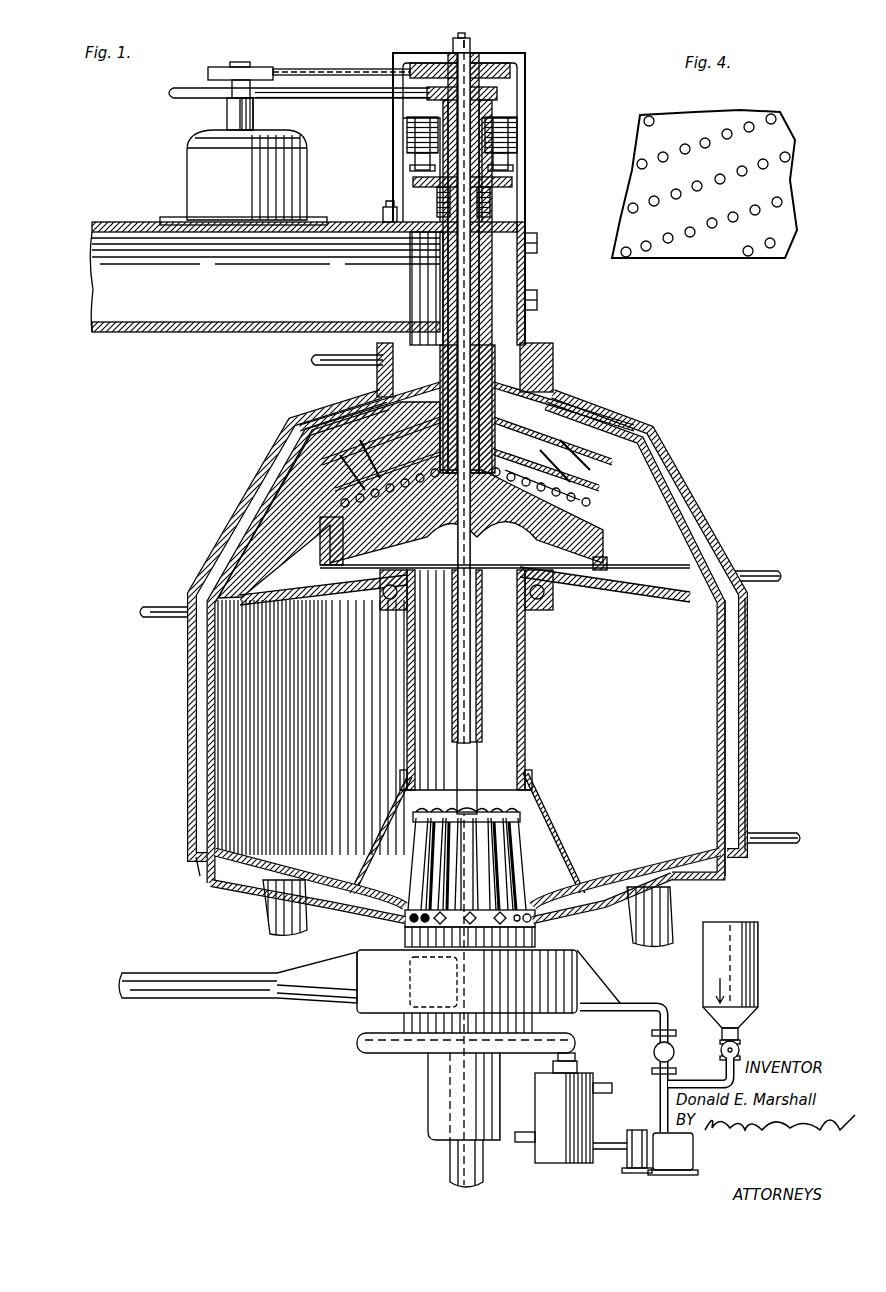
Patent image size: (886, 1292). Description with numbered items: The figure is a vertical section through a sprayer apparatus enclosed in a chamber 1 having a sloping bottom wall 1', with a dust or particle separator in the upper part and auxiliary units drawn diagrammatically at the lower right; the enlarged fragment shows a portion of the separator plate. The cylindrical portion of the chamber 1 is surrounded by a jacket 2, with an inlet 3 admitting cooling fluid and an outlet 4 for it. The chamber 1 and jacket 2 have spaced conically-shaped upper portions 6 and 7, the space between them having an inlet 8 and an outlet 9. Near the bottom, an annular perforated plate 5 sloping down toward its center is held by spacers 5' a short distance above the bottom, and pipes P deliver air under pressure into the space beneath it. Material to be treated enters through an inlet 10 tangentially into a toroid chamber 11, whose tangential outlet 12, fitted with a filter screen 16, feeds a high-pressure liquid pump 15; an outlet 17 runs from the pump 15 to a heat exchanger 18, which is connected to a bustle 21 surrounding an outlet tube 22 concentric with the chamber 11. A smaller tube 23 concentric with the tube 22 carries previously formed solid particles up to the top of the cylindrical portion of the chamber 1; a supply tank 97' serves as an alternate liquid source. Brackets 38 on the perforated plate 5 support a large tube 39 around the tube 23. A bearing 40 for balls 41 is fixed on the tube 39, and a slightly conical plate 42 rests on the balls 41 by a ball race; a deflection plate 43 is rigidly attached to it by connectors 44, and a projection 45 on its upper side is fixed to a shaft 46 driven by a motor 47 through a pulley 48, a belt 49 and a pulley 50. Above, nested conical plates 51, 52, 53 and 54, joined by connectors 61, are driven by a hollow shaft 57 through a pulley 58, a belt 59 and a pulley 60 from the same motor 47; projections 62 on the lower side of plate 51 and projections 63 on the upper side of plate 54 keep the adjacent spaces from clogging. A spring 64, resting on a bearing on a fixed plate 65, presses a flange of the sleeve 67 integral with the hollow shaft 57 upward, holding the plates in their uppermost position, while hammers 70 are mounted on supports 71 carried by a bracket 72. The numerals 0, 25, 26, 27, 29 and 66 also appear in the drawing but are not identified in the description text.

In FIG. 1, the housing duct 0 is at (143, 333).
In FIG. 1, the chamber 1 is at (750, 738).
In FIG. 1, the sloping bottom wall 1' is at (212, 886).
In FIG. 1, the jacket 2 is at (747, 722).
In FIG. 1, the inlet 3 is at (168, 606).
In FIG. 1, the outlet 4 is at (778, 833).
In FIG. 1, the annular perforated plate 5 is at (467, 864).
In FIG. 1, the spacers 5' is at (441, 899).
In FIG. 1, the conically-shaped upper portion 6 is at (230, 553).
In FIG. 1, the conically-shaped upper portion 7 is at (240, 526).
In FIG. 1, the inlet 8 is at (310, 358).
In FIG. 1, the outlet 9 is at (772, 571).
In FIG. 1, the inlet 10 is at (165, 1002).
In FIG. 1, the toroid chamber 11 is at (357, 1003).
In FIG. 1, the tangential outlet 12 is at (662, 1006).
In FIG. 1, the high-pressure liquid pump 15 is at (636, 1130).
In FIG. 1, the filter screen 16 is at (652, 1054).
In FIG. 1, the outlet 17 is at (600, 1160).
In FIG. 1, the heat exchanger 18 is at (535, 1110).
In FIG. 1, the bustle 21 is at (357, 1050).
In FIG. 1, the outlet tube 22 is at (428, 1106).
In FIG. 1, the tube 23 is at (482, 660).
In FIG. 1, the shaft head 25 is at (480, 812).
In FIG. 1, the lower ring 26 is at (535, 935).
In FIG. 1, the upper ring 27 is at (405, 930).
In FIG. 1, the tubes 29 is at (520, 842).
In FIG. 1, the brackets 38 is at (404, 810).
In FIG. 1, the large tube 39 is at (525, 690).
In FIG. 1, the bearing 40 is at (548, 612).
In FIG. 1, the balls 41 is at (544, 595).
In FIG. 1, the conical plate 42 is at (628, 605).
In FIG. 1, the deflection plate 43 is at (480, 515).
In FIG. 1, the connectors 44 is at (607, 566).
In FIG. 1, the projection 45 is at (560, 395).
In FIG. 1, the shaft 46 is at (470, 262).
In FIG. 1, the motor 47 is at (307, 165).
In FIG. 1, the pulley 48 is at (220, 66).
In FIG. 1, the belt 49 is at (352, 66).
In FIG. 1, the pulley 50 is at (510, 72).
In FIG. 1, the conical plate 51 is at (592, 505).
In FIG. 4, the conical plate 51 is at (778, 185).
In FIG. 1, the conical plate 52 is at (598, 500).
In FIG. 1, the conical plate 53 is at (600, 478).
In FIG. 1, the conical plate 54 is at (640, 453).
In FIG. 1, the hollow shaft 57 is at (479, 322).
In FIG. 1, the pulley 58 is at (497, 95).
In FIG. 1, the belt 59 is at (330, 100).
In FIG. 1, the pulley 60 is at (227, 104).
In FIG. 1, the connectors 61 is at (372, 402).
In FIG. 1, the projections 62 is at (430, 515).
In FIG. 4, the projections 62 is at (668, 160).
In FIG. 1, the projections 63 is at (330, 420).
In FIG. 1, the spring 64 is at (490, 200).
In FIG. 1, the plate 65 is at (517, 226).
In FIG. 1, the bolt 66 is at (537, 250).
In FIG. 1, the sleeve 67 is at (383, 192).
In FIG. 1, the hammers 70 is at (407, 135).
In FIG. 1, the supports 71 is at (403, 114).
In FIG. 1, the bracket 72 is at (393, 178).
In FIG. 1, the supply tank 97' is at (733, 1003).
In FIG. 1, the pipes P is at (262, 920).